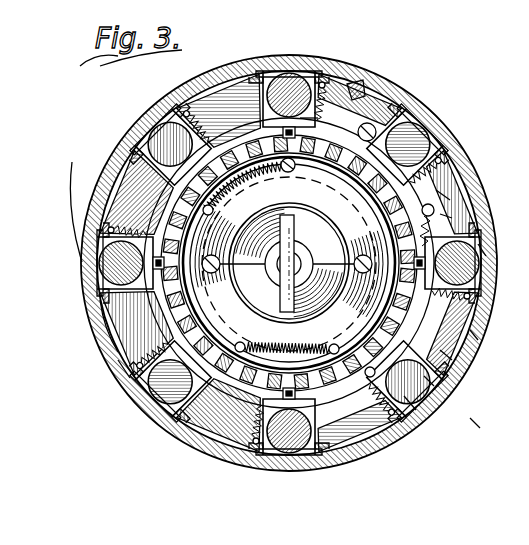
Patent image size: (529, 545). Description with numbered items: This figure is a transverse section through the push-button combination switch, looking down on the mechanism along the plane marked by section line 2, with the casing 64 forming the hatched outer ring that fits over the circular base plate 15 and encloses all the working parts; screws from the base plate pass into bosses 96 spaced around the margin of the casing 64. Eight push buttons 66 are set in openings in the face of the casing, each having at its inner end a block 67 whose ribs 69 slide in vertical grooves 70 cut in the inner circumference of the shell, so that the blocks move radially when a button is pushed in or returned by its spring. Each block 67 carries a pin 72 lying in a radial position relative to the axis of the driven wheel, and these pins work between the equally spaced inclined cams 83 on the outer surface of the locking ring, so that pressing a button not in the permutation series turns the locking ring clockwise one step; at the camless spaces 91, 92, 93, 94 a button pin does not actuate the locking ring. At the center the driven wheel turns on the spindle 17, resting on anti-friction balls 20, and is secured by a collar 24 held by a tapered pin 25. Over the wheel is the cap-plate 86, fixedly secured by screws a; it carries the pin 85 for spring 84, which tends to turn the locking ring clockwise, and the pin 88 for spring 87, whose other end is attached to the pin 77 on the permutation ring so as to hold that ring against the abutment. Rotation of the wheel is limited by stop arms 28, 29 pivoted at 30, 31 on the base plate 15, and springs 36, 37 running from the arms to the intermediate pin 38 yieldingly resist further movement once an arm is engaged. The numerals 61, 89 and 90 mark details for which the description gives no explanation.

The section line 2- 2 is at (287, 34).
The base plate 15 is at (112, 362).
The spindle 17 is at (276, 250).
The anti-friction balls 20 is at (476, 336).
The collar 24 is at (291, 171).
The tapered pin 25 is at (273, 263).
The stop arm 28 is at (430, 380).
The stop arm 29 is at (371, 122).
The pivot 30 is at (448, 356).
The pivot 31 is at (398, 110).
The spring 36 is at (448, 216).
The spring 37 is at (430, 192).
The intermediate pin 38 is at (446, 200).
The pin 61 is at (426, 202).
The casing 64 is at (202, 102).
The push buttons 66 is at (160, 134).
The block 67 is at (300, 76).
The ribs 69 is at (278, 72).
The vertical grooves 70 is at (262, 98).
The pin 72 is at (298, 122).
The pin 77 is at (318, 121).
The inclined ribs or cams 83 is at (480, 430).
The spring 84 is at (332, 344).
The pin 85 is at (282, 333).
The cap-plate 86 is at (492, 320).
The spring 87 is at (247, 185).
The pin 88 is at (142, 152).
The dashed circle 89 is at (289, 264).
The pin 90 is at (369, 378).
The camless space 91 is at (412, 404).
The camless space 92 is at (484, 250).
The camless space 93 is at (208, 216).
The camless space 94 is at (112, 318).
The bosses 96 is at (350, 80).
The screws a is at (283, 264).